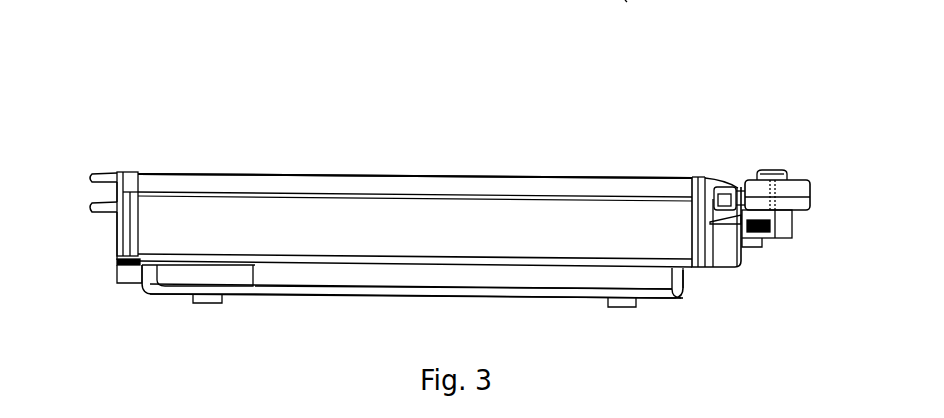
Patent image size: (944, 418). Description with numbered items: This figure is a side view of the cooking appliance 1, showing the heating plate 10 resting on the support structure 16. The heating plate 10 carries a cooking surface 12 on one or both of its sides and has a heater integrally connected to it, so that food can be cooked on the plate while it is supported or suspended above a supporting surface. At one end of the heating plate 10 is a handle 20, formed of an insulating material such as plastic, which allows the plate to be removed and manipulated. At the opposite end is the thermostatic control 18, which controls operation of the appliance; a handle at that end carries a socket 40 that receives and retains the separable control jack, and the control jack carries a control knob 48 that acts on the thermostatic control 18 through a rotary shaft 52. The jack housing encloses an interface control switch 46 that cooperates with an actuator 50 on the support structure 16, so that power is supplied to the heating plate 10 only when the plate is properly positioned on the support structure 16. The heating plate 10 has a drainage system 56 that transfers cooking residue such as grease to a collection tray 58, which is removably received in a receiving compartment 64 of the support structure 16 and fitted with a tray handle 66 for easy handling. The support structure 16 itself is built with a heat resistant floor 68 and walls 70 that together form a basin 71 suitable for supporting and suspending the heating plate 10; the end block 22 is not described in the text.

The cooking appliance 1 is at (216, 65).
The heating plate 10 is at (403, 187).
The cooking surface 12 is at (165, 173).
The support structure 16 is at (435, 228).
The thermostatic control 18 is at (807, 187).
The handle 20 is at (103, 173).
The end block 22 is at (738, 268).
The socket 40 is at (740, 187).
The interface control switch 46 is at (792, 230).
The control knob 48 is at (783, 170).
The actuator 50 is at (760, 248).
The rotary shaft 52 is at (808, 197).
The drainage system 56 is at (627, 0).
The collection tray 58 is at (128, 285).
The receiving compartment 64 is at (243, 277).
The tray handle 66 is at (117, 278).
The heat resistant floor 68 is at (650, 300).
The wall 70 is at (687, 282).
The basin 71 is at (683, 295).